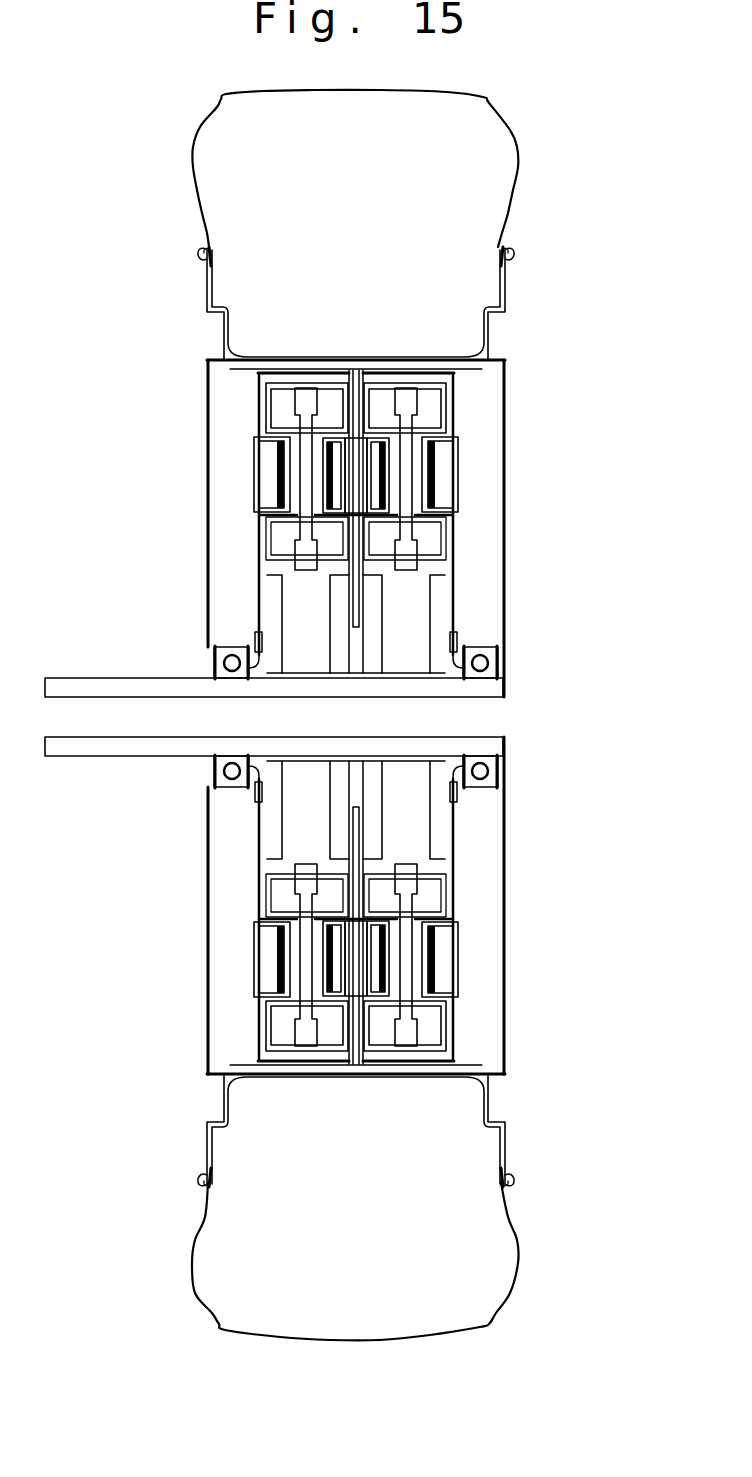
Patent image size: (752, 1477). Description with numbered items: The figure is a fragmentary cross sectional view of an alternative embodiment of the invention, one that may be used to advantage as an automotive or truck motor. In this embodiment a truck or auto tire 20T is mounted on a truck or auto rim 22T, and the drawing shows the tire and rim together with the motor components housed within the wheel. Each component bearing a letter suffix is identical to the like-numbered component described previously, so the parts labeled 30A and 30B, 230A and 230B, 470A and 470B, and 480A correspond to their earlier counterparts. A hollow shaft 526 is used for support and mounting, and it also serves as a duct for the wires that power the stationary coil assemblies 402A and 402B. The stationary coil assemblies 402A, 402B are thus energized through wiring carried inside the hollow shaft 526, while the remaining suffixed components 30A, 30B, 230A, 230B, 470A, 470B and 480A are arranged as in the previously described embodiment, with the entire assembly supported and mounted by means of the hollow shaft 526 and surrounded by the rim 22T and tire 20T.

The truck or auto tire 20T is at (513, 133).
The truck or auto rim 22T is at (505, 266).
The first motor unit 30A is at (256, 470).
The second motor unit 30B is at (378, 463).
The first rotor assembly 230A is at (335, 463).
The second rotor assembly 230B is at (459, 468).
The stationary coil assembly 402A is at (265, 403).
The stationary coil assembly 402B is at (455, 387).
The first support leg 470A is at (271, 622).
The second support leg 470B is at (435, 615).
The roller 480A is at (201, 663).
The hollow shaft 526 is at (503, 692).